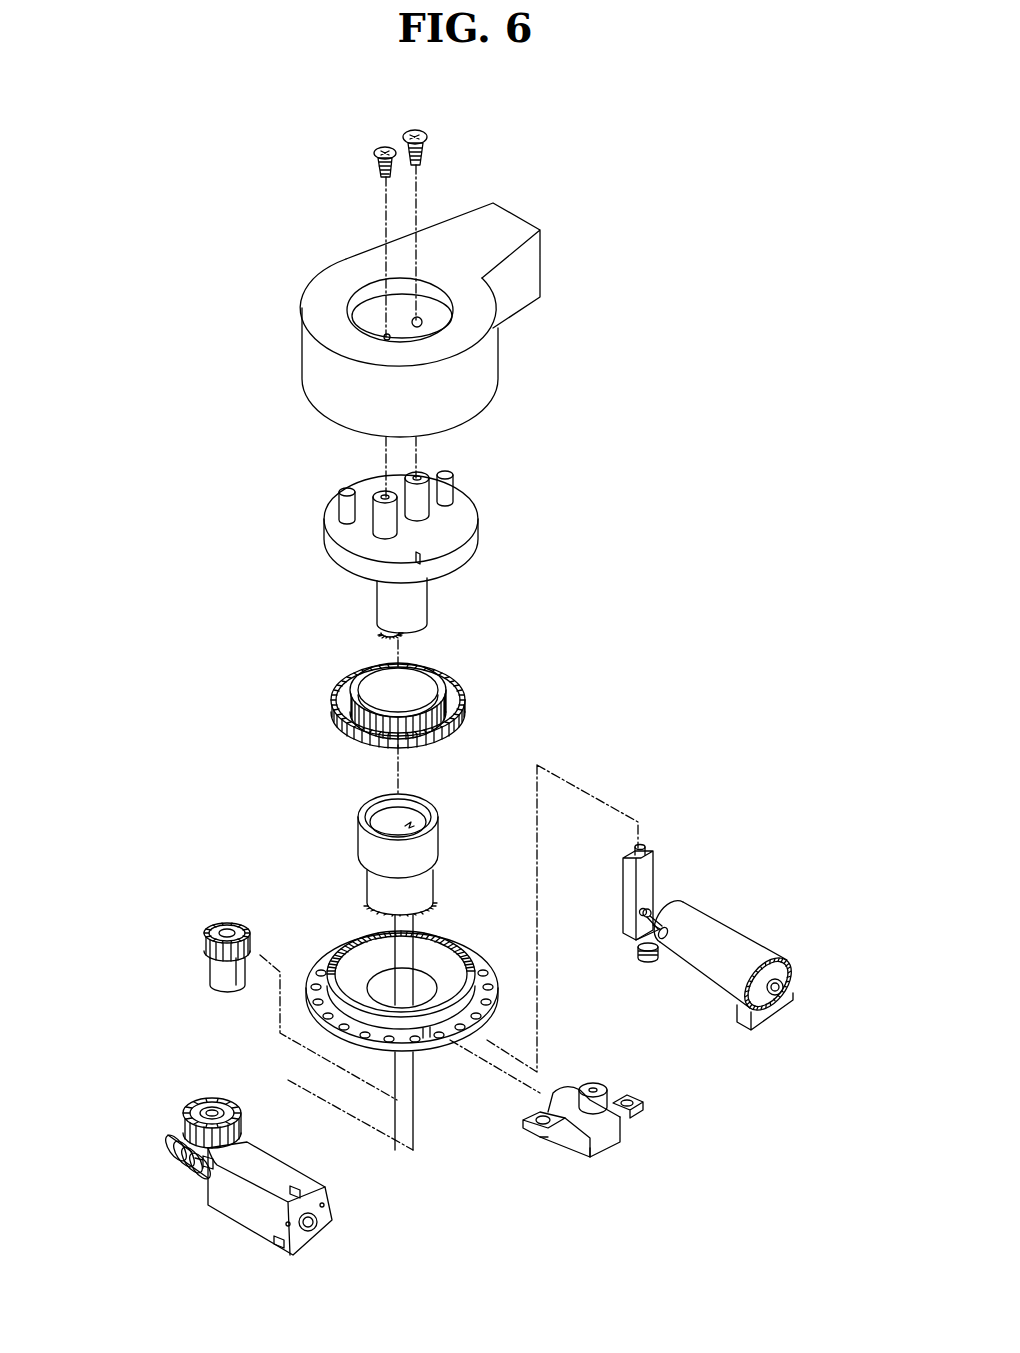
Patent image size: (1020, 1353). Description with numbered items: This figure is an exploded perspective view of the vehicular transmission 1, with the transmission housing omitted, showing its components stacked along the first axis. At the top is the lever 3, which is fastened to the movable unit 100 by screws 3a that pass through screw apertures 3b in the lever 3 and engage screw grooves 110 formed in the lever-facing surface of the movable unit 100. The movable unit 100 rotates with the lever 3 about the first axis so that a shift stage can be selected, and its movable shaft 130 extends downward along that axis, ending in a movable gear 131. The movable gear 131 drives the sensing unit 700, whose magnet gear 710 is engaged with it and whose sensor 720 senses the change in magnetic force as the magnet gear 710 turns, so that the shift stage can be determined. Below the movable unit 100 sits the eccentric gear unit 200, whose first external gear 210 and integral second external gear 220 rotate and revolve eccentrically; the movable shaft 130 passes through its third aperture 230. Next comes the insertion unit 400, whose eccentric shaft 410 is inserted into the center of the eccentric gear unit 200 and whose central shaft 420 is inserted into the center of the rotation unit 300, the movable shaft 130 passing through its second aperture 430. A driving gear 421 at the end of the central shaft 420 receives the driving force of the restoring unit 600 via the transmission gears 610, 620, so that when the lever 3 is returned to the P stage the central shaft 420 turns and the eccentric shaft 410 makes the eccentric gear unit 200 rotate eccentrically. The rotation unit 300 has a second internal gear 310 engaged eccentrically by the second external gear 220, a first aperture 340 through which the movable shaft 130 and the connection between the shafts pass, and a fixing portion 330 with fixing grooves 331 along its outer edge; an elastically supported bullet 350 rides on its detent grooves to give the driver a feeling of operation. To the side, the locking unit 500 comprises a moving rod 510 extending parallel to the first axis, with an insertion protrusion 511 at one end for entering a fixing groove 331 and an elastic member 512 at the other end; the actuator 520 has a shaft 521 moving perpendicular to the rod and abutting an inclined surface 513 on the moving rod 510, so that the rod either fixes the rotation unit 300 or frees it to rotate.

The vehicular transmission 1 is at (646, 159).
The lever 3 is at (472, 332).
The screws 3a is at (428, 135).
The screw apertures 3b is at (420, 322).
The movable unit 100 is at (498, 510).
The screw grooves 110 is at (418, 478).
The movable shaft 130 is at (418, 595).
The movable gear 131 is at (378, 630).
The eccentric gear unit 200 is at (477, 702).
The first external gear 210 is at (457, 690).
The second external gear 220 is at (455, 728).
The third aperture 230 is at (390, 680).
The rotation unit 300 is at (510, 970).
The second internal gear 310 is at (427, 955).
The fixing portion 330 is at (500, 1000).
The fixing grooves 331 is at (505, 1030).
The first aperture 340 is at (417, 988).
The bullet 350 is at (550, 1093).
The insertion unit 400 is at (345, 858).
The eccentric shaft 410 is at (365, 842).
The central shaft 420 is at (378, 878).
The driving gear 421 is at (437, 897).
The second aperture 430 is at (412, 822).
The locking unit 500 is at (792, 930).
The moving rod 510 is at (628, 878).
The insertion protrusion 511 is at (645, 850).
The elastic member 512 is at (648, 960).
The inclined surface 513 is at (647, 925).
The actuator 520 is at (727, 930).
The shaft 521 is at (657, 907).
The restoring unit 600 is at (242, 1213).
The transmission gear 610 is at (168, 1148).
The transmission gear 620 is at (240, 1127).
The sensing unit 700 is at (115, 947).
The magnet gear 710 is at (218, 967).
The sensor 720 is at (215, 990).